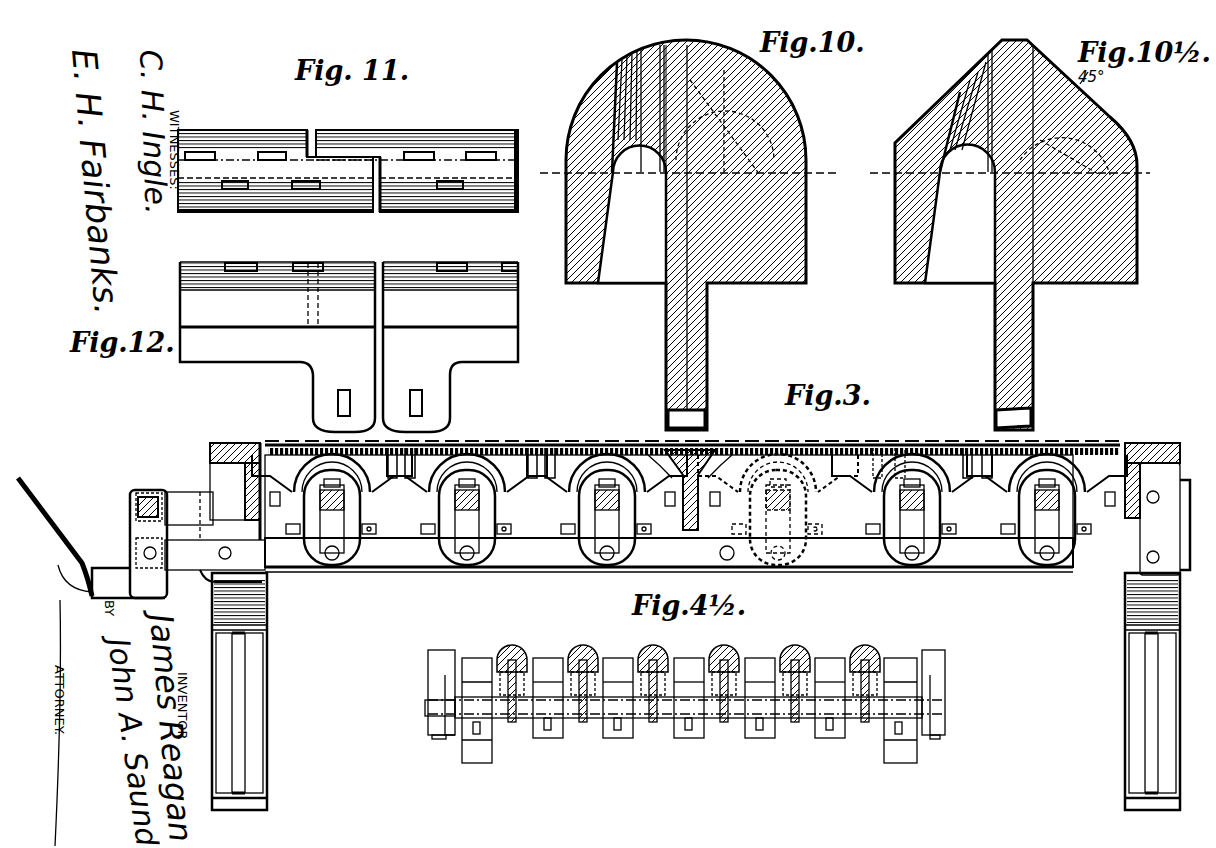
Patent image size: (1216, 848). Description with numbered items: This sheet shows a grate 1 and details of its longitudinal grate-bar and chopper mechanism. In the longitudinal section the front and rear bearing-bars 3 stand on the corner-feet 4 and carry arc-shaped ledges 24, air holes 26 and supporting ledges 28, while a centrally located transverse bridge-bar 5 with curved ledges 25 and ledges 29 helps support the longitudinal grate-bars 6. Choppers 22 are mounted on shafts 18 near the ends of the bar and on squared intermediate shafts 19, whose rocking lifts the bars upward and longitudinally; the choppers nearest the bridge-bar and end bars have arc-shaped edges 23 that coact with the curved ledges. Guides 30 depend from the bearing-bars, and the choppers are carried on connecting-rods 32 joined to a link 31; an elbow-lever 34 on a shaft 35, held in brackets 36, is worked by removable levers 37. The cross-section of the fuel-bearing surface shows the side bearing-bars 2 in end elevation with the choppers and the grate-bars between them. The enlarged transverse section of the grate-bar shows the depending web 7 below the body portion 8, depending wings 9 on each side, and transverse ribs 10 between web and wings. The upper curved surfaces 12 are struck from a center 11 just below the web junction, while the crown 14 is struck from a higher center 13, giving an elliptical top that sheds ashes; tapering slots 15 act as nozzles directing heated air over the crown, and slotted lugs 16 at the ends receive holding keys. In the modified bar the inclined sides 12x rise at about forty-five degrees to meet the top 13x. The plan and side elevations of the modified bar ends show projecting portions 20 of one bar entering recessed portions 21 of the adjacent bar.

In FIG. 3, the grate 1 is at (247, 691).
The side bearing-bars 2 is at (428, 684).
In FIG. 10, the front and rear bearing-bars 3 is at (638, 72).
In FIG. 3, the front and rear bearing-bars 3 is at (212, 436).
In FIG. 3, the corner-feet 4 is at (1143, 691).
In FIG. 3, the transverse bridge-bar 5 is at (690, 490).
In FIG. 3, the longitudinal grate-bar 6 is at (540, 448).
The longitudinal grate-bar 6 is at (512, 645).
In FIG. 12, the longitudinally-extending web 7 is at (349, 347).
In FIG. 10, the longitudinally-extending web 7 is at (706, 326).
In FIG. 3, the longitudinally-extending web 7 is at (538, 478).
In FIG. 10, the top or body portion 8 is at (731, 98).
In FIG. 12, the depending wings 9 is at (349, 294).
In FIG. 10, the depending wings 9 is at (689, 235).
In FIG. 10, the transverse ribs 10 is at (645, 168).
The transverse ribs 10 is at (1010, 210).
In FIG. 10, the center of the radius 11 is at (685, 180).
In FIG. 10, the upper curved surfaces 12 is at (693, 88).
In FIG. 10, the center for the crown 13 is at (706, 140).
The center for the crown 13 is at (1020, 200).
In FIG. 10, the crown 14 is at (695, 98).
In FIG. 3, the crown 14 is at (692, 439).
In FIG. 11, the apertures or slots 15 is at (272, 156).
In FIG. 12, the apertures or slots 15 is at (304, 266).
In FIG. 10, the apertures or slots 15 is at (636, 68).
In FIG. 3, the apertures or slots 15 is at (612, 447).
In FIG. 12, the lugs 16 is at (381, 401).
In FIG. 3, the lugs 16 is at (693, 510).
In FIG. 3, the shafts 18 is at (345, 500).
The shafts 18 is at (570, 710).
In FIG. 3, the intermediate shafts 19 is at (455, 500).
In FIG. 11, the projecting portions 20 is at (322, 150).
In FIG. 11, the recessed portions 21 is at (308, 129).
In FIG. 3, the choppers 22 is at (1080, 433).
The choppers 22 is at (475, 658).
In FIG. 3, the arc-shaped edges 23 is at (272, 456).
In FIG. 3, the arc-shaped ledges 24 is at (262, 450).
In FIG. 3, the arc-shaped ledges of bridge-bar 25 is at (712, 452).
In FIG. 3, the holes 26 is at (255, 478).
In FIG. 3, the ledges 28 is at (260, 522).
The ledges of bridge-bar 29 is at (512, 715).
In FIG. 3, the guides or lugs 30 is at (240, 578).
In FIG. 3, the link 31 is at (204, 555).
In FIG. 3, the connecting-rods 32 is at (669, 513).
In FIG. 3, the elbow-lever 34 is at (128, 583).
In FIG. 3, the shaft 35 is at (136, 500).
In FIG. 3, the brackets 36 is at (189, 516).
In FIG. 3, the levers 37 is at (55, 534).
The inclined sides of the bar 12x is at (1040, 60).
The top of modified bar 13x is at (1018, 40).